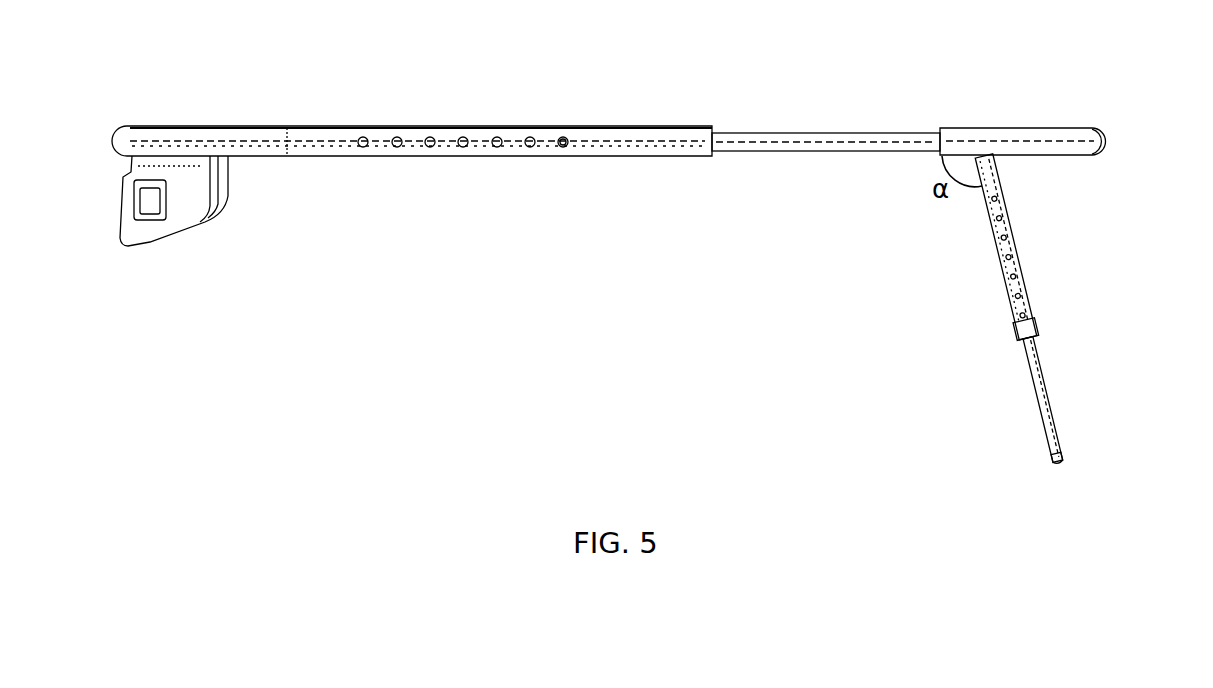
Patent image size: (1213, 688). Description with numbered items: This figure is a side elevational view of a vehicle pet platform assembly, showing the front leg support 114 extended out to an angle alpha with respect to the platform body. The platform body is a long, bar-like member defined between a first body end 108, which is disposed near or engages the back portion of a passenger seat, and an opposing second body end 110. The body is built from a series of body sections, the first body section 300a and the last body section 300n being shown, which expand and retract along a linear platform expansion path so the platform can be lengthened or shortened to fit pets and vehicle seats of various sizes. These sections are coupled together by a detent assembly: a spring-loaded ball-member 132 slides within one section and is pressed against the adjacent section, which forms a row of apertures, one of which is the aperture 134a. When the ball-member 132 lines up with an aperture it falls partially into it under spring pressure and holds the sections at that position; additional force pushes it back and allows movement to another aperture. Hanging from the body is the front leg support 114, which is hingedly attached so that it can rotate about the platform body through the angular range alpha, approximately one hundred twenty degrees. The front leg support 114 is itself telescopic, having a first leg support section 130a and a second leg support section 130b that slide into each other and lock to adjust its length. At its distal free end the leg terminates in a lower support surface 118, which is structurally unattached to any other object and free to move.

The first body end 108 is at (110, 127).
The aperture 134a is at (361, 139).
The body section 300a is at (453, 133).
The spring-loaded ball-member 132 is at (562, 145).
The body section 300n is at (966, 133).
The second body end 110 is at (1108, 136).
The front leg support 114 is at (1042, 337).
The leg support section 130a is at (1017, 278).
The leg support section 130b is at (1057, 418).
The lower support surface 118 is at (1070, 462).